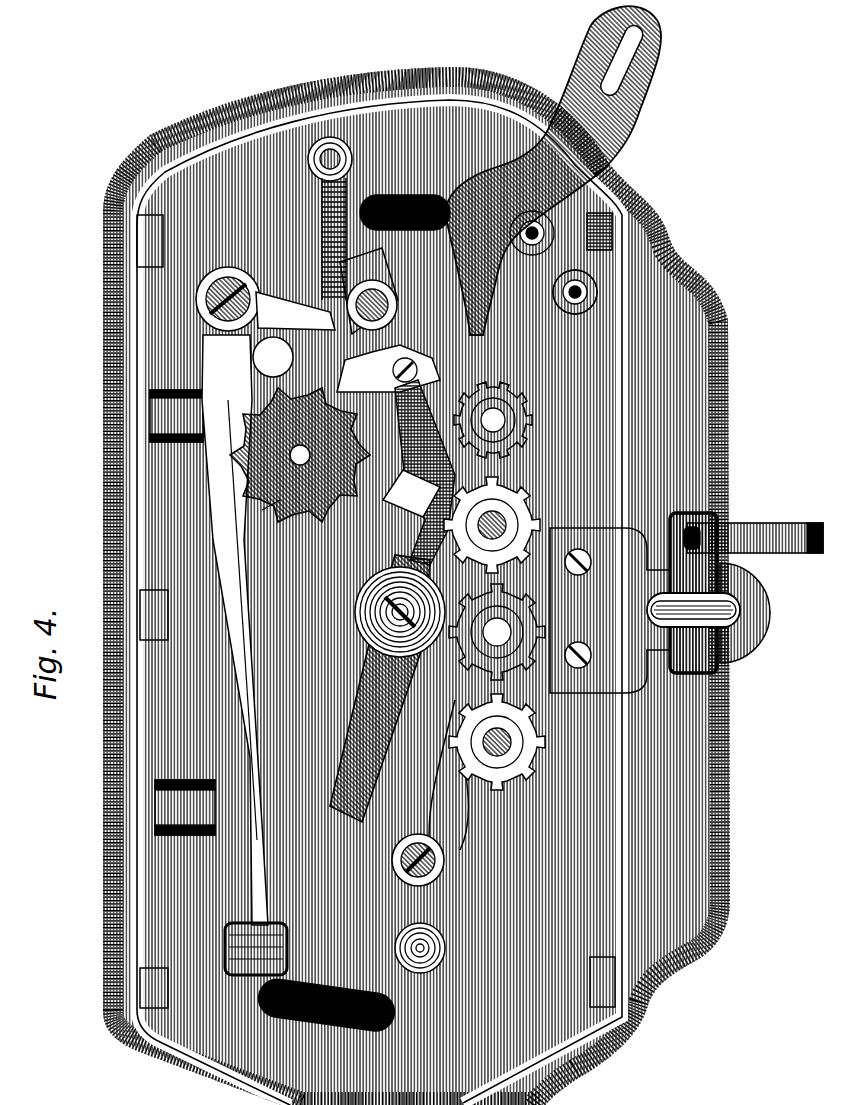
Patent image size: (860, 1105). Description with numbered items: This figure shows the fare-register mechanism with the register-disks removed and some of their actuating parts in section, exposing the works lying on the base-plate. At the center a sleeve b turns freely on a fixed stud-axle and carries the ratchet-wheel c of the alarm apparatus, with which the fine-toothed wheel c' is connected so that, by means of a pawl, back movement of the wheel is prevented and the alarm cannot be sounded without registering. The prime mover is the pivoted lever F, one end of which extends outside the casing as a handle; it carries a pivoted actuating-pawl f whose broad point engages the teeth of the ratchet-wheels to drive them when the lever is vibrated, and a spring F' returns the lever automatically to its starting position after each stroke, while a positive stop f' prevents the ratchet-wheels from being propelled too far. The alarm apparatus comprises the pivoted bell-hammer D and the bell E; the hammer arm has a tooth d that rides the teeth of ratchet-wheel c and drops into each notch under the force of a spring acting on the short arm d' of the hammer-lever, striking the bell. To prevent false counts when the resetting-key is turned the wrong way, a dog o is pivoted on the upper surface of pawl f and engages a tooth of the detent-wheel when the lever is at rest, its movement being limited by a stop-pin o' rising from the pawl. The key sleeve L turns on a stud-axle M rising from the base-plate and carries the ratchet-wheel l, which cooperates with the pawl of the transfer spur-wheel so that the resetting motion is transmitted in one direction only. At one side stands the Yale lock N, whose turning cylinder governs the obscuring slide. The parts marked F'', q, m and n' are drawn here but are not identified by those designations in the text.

The spring F' is at (553, 170).
The pivoted lever F is at (387, 688).
The lever arm F'' is at (448, 767).
The Yale lock N is at (296, 455).
The sleeve L is at (372, 298).
The stud-axle M is at (380, 291).
The fine-toothed wheel c' is at (325, 218).
The ratchet-wheel c is at (388, 368).
The tooth or projection d is at (232, 596).
The short arm d' is at (616, 305).
The bell-hammer D is at (256, 949).
The bell E is at (448, 948).
The actuating-pawl f is at (425, 472).
The positive stop f' is at (411, 493).
The ratchet-wheel l is at (504, 508).
The toothed wheel q is at (498, 405).
The pivot screw m is at (415, 833).
The arm n' is at (281, 326).
The dog o is at (281, 357).
The stop-pin o' is at (258, 517).
The sleeve b is at (735, 567).